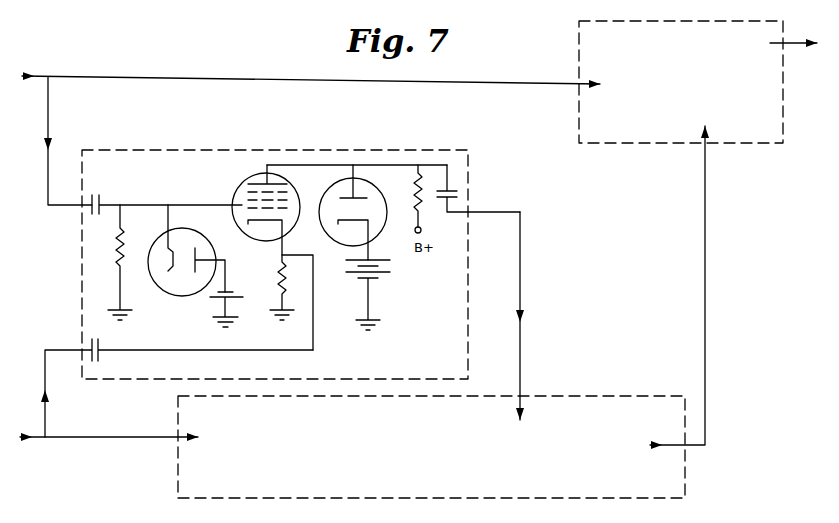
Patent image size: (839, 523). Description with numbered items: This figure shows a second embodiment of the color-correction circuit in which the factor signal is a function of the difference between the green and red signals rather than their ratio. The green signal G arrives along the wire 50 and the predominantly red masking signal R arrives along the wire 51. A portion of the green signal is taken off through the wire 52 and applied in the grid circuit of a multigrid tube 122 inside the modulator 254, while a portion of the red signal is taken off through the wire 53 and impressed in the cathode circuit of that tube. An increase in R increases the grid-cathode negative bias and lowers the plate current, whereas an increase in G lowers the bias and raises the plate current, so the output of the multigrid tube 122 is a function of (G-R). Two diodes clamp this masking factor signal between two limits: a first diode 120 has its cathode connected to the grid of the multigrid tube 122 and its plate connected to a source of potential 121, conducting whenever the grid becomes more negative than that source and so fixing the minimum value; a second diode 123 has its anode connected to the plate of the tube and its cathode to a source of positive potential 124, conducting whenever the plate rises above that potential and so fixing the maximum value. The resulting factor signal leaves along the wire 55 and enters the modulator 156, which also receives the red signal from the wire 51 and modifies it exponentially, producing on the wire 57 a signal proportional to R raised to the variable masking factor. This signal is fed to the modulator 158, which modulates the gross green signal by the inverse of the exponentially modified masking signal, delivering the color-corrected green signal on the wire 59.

The wire 50 is at (113, 76).
The wire 52 is at (49, 101).
The modulator 254 is at (190, 148).
The first diode 120 is at (152, 284).
The source of potential 121 is at (243, 294).
The multigrid tube 122 is at (238, 186).
The second diode 123 is at (378, 232).
The source of positive potential 124 is at (378, 276).
The wire 55 is at (521, 288).
The wire 53 is at (45, 408).
The wire 51 is at (107, 437).
The modulator 156 is at (431, 447).
The wire 57 is at (706, 284).
The modulator 158 is at (681, 82).
The wire 59 is at (783, 50).